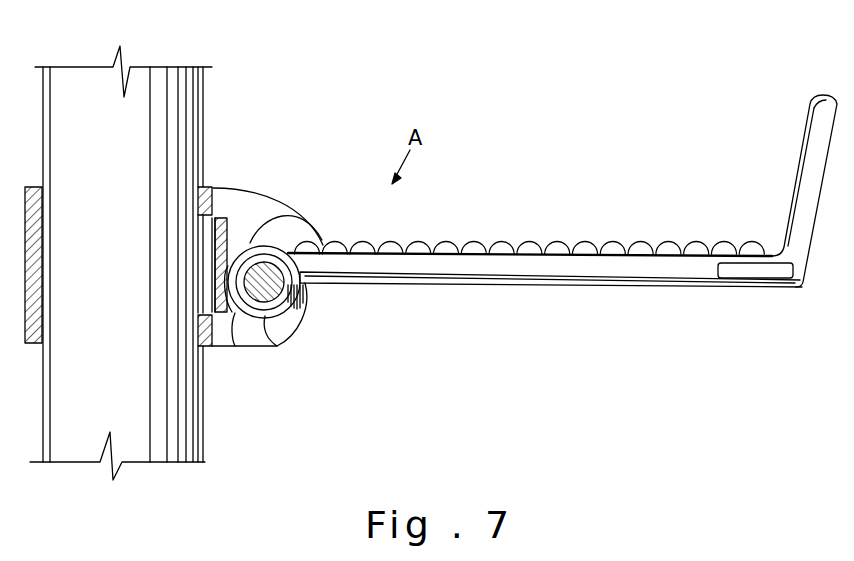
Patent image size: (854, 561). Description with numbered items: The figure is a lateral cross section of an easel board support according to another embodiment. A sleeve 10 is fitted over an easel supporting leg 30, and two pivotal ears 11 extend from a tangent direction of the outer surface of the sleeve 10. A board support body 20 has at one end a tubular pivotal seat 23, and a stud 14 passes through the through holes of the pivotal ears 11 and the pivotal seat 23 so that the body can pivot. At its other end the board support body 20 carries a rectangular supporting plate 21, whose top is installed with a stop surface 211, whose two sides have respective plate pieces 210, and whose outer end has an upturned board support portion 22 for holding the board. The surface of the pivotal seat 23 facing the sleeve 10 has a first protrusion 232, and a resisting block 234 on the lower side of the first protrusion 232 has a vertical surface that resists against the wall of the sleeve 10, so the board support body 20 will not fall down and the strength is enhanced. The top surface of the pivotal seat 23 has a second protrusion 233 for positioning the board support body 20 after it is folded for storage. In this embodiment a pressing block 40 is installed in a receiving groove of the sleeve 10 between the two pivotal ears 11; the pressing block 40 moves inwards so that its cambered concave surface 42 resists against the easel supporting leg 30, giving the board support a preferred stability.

The easel supporting leg 30 is at (80, 74).
The sleeve 10 is at (42, 218).
The cambered concave surface 42 is at (200, 251).
The pressing block 40 is at (222, 237).
The pivotal ear 11 is at (280, 200).
The second protrusion 233 is at (298, 215).
The first protrusion 232 is at (215, 288).
The resisting block 234 is at (237, 320).
The stud 14 is at (266, 302).
The tubular pivotal seat 23 is at (303, 317).
The board support body 20 is at (541, 287).
The rectangular supporting plate 21 is at (633, 273).
The stop surface 211 is at (530, 247).
The plate piece 210 is at (757, 278).
The board support portion 22 is at (808, 133).